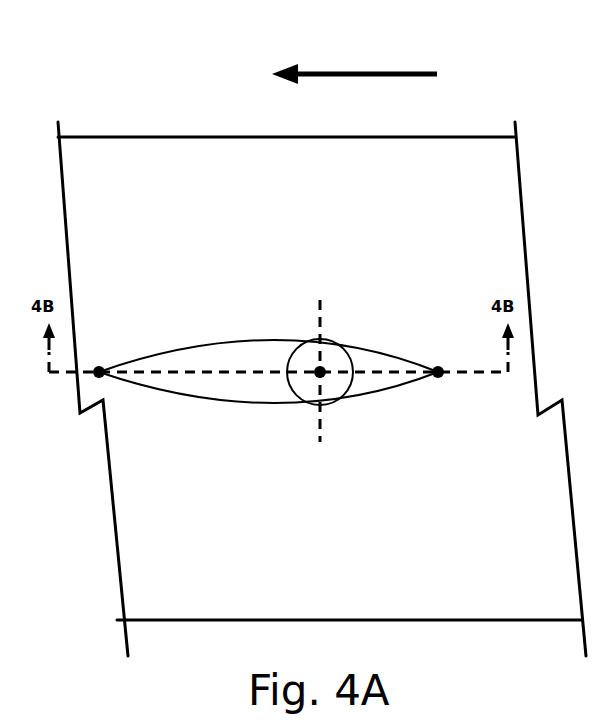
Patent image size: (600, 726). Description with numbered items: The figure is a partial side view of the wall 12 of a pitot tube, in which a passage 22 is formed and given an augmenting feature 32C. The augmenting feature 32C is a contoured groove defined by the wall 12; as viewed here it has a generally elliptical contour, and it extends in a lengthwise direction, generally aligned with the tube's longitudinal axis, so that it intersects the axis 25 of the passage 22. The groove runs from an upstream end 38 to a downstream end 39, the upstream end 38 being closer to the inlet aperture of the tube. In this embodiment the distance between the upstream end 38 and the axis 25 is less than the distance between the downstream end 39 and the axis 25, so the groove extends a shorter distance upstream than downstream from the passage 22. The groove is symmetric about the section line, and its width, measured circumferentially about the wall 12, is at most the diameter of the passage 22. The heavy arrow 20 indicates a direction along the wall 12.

The wall 12 is at (118, 102).
The direction of travel 20 is at (370, 72).
The passage 22 is at (338, 356).
The axis 25 is at (317, 378).
The augmenting feature 32C is at (361, 387).
The upstream end 38 is at (438, 367).
The downstream end 39 is at (103, 367).